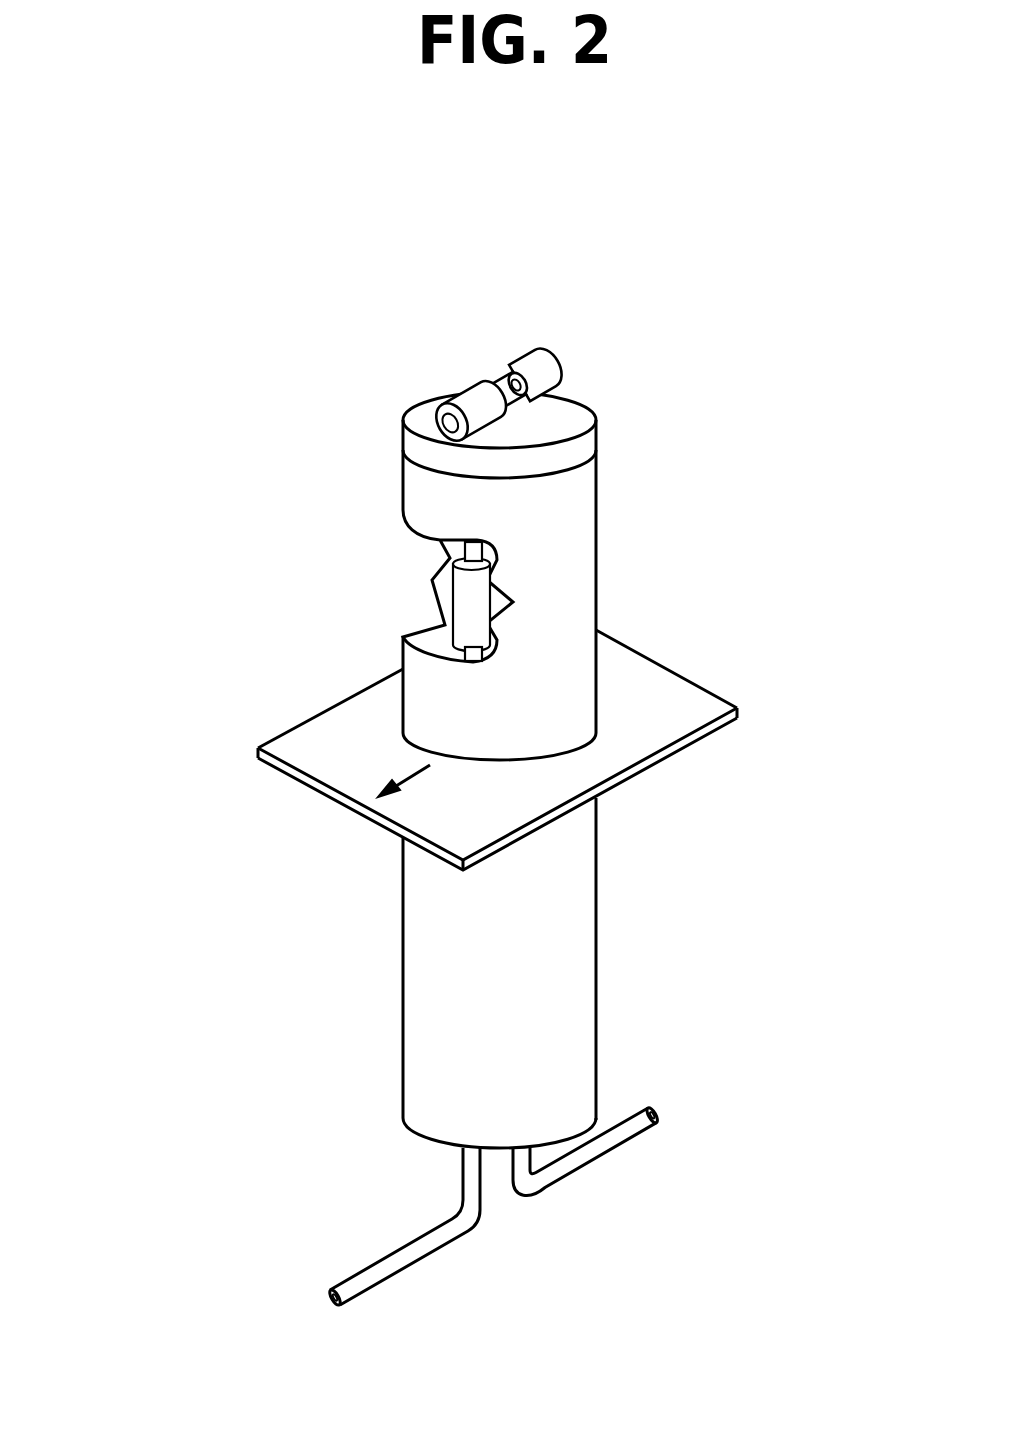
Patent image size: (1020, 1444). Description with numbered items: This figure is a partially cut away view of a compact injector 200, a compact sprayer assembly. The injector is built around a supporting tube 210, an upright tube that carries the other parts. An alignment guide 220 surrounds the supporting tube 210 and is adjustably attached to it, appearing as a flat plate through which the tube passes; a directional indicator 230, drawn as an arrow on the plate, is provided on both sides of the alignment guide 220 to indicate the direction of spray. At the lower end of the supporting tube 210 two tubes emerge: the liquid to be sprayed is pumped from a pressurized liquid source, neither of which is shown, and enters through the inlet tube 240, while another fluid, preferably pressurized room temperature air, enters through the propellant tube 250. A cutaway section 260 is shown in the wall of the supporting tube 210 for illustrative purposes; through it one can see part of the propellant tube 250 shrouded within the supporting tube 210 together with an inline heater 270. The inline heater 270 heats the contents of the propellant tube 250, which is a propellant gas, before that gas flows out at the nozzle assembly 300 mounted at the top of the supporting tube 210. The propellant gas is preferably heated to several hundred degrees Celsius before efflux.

The compact injector 200 is at (201, 314).
The supporting tube 210 is at (548, 522).
The alignment guide 220 is at (637, 705).
The directional indicator 230 is at (397, 767).
The inlet tube 240 is at (613, 1155).
The propellant tube 250 is at (468, 557).
The cutaway section 260 is at (440, 540).
The inline heater 270 is at (473, 605).
The nozzle assembly 300 is at (587, 337).